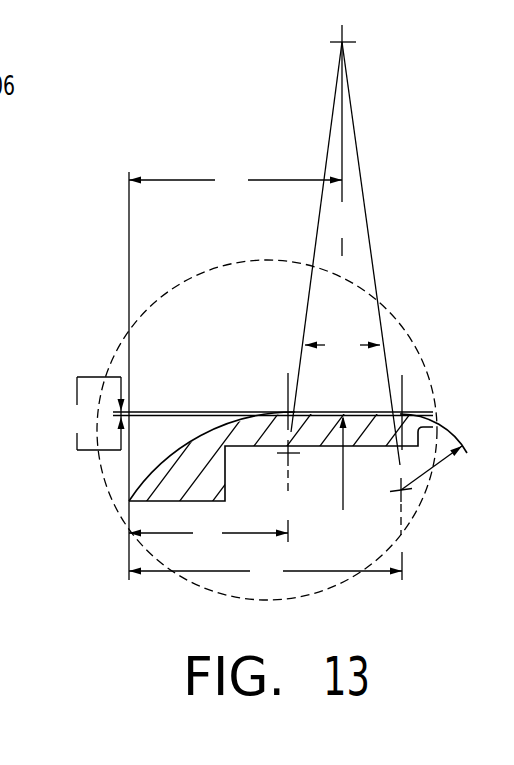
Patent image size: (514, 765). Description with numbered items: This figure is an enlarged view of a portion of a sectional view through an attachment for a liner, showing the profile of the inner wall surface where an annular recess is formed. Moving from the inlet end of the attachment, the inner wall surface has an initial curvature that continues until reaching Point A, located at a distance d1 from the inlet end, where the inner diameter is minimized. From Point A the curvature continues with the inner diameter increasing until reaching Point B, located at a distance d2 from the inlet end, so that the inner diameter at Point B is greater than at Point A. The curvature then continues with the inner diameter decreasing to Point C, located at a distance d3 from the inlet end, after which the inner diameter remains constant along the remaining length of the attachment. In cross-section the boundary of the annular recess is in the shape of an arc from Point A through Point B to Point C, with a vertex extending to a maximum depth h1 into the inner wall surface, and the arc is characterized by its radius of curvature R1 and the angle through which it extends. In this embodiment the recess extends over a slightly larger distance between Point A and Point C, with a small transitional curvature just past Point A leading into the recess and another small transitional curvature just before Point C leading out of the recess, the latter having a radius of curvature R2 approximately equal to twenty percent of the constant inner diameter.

The Point B is at (345, 245).
The distance d2 is at (235, 182).
The maximum depth h1 is at (93, 413).
The Point A is at (288, 491).
The Point C is at (401, 529).
The distance d1 is at (208, 535).
The distance d3 is at (265, 572).
The radius of curvature R1 is at (343, 510).
The radius of curvature R2 is at (442, 452).